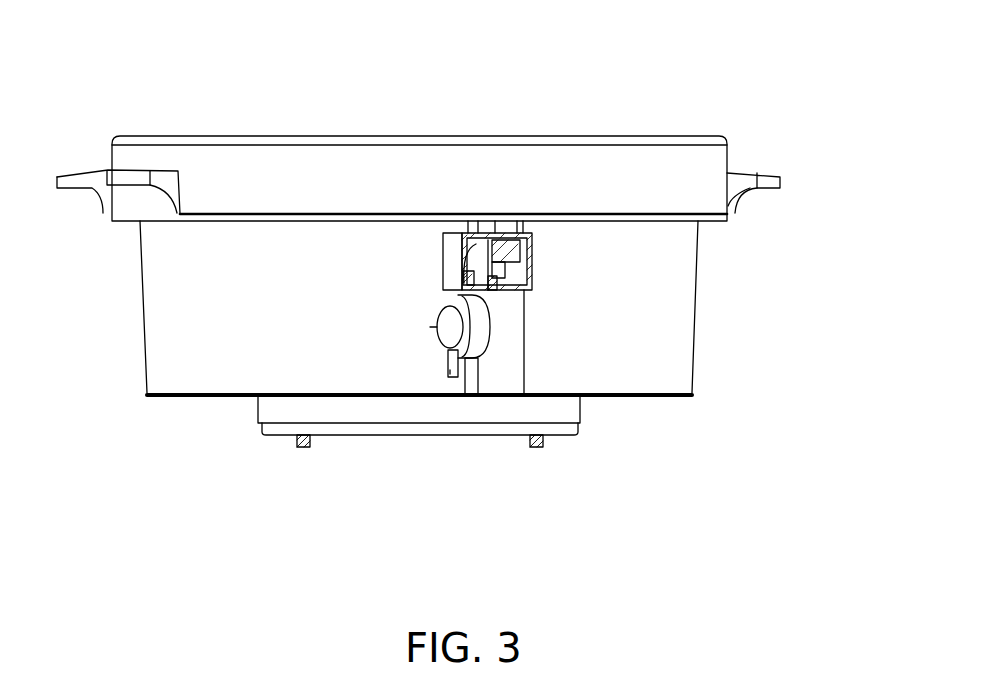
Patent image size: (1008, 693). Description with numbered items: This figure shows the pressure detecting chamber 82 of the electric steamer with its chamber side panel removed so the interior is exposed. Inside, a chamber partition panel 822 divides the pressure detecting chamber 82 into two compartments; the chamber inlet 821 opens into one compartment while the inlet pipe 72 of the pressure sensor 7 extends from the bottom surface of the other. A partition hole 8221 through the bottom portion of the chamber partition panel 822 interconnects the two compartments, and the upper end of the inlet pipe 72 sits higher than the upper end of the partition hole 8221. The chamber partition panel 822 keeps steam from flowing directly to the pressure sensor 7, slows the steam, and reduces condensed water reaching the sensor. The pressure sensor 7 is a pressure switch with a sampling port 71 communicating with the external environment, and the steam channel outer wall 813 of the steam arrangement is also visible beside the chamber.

The pressure sensor 7 is at (475, 330).
The sampling port 71 is at (455, 367).
The inlet pipe 72 is at (462, 240).
The pressure detecting chamber 82 is at (452, 263).
The chamber inlet 821 is at (507, 277).
The chamber partition panel 822 is at (497, 240).
The partition hole 8221 is at (493, 292).
The steam channel outer wall 813 is at (500, 365).